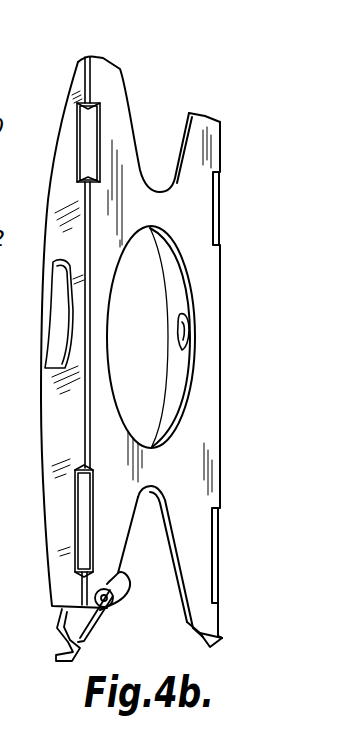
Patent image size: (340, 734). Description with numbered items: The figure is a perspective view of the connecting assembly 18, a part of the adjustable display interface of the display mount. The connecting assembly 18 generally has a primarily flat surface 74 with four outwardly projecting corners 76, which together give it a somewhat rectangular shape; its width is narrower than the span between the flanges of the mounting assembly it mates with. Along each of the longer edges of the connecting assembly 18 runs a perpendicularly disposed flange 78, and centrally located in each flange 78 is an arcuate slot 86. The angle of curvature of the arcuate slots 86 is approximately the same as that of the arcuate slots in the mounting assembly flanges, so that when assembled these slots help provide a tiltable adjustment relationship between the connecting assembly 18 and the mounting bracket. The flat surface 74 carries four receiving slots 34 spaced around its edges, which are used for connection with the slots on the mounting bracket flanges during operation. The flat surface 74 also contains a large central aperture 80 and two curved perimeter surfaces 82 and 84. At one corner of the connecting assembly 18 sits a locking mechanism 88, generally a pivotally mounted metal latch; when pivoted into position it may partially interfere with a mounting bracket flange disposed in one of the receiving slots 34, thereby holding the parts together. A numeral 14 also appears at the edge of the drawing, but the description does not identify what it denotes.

The connecting assembly 18 is at (54, 108).
The housing 14 is at (0, 308).
The receiving slots 34 is at (90, 147).
The flat surface 74 is at (188, 457).
The outwardly projecting corners 76 is at (98, 68).
The flanges 78 is at (180, 300).
The central aperture 80 is at (133, 370).
The curved perimeter surface 82 is at (186, 580).
The curved perimeter surface 84 is at (177, 138).
The arcuate slots 86 is at (67, 329).
The locking mechanism 88 is at (74, 661).